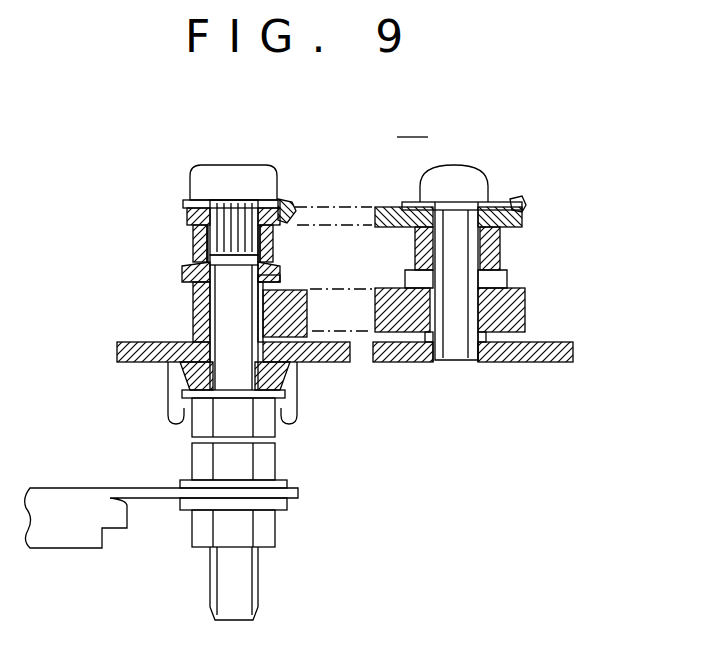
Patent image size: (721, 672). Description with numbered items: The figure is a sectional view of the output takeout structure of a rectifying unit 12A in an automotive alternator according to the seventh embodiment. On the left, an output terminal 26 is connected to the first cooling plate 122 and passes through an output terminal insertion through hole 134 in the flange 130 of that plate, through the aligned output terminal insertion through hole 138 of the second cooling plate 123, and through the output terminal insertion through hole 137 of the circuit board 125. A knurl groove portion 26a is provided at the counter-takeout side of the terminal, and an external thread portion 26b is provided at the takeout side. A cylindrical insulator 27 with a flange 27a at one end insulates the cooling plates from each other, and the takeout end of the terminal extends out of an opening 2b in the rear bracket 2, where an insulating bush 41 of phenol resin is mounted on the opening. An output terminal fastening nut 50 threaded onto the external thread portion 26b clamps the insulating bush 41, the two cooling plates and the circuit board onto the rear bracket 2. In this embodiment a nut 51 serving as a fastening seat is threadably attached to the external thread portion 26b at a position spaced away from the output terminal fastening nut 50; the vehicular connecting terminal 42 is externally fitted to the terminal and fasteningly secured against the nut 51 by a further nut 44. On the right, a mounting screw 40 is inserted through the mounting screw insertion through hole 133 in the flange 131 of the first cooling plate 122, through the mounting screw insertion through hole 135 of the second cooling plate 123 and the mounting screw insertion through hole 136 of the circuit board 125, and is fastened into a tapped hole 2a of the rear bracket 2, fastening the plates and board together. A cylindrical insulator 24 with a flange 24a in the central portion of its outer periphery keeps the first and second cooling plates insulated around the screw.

The rear bracket 2 is at (525, 365).
The tapped hole 2a is at (462, 362).
The opening 2b is at (300, 322).
The rectifying unit 12A is at (418, 125).
The insulator 24 is at (409, 281).
The flange 24a is at (505, 278).
The output terminal 26 is at (231, 165).
The knurl groove portion 26a is at (248, 200).
The external thread portion 26b is at (210, 576).
The insulator 27 is at (183, 272).
The flange 27a is at (278, 273).
The mounting screw 40 is at (478, 170).
The insulating bush 41 is at (170, 385).
The connecting terminal 42 is at (80, 488).
The nut 44 is at (275, 528).
The output terminal fastening nut 50 is at (275, 422).
The nut 51 is at (278, 460).
The first cooling plate 122 is at (292, 207).
The second cooling plate 123 is at (526, 315).
The circuit board 125 is at (522, 202).
The flange 130 is at (272, 242).
The flange 131 is at (418, 246).
The mounting screw insertion through hole 133 is at (500, 242).
The output terminal insertion through hole 134 is at (195, 238).
The mounting screw insertion through hole 135 is at (525, 300).
The mounting screw insertion through hole 136 is at (522, 207).
The output terminal insertion through hole 137 is at (190, 209).
The output terminal insertion through hole 138 is at (200, 306).